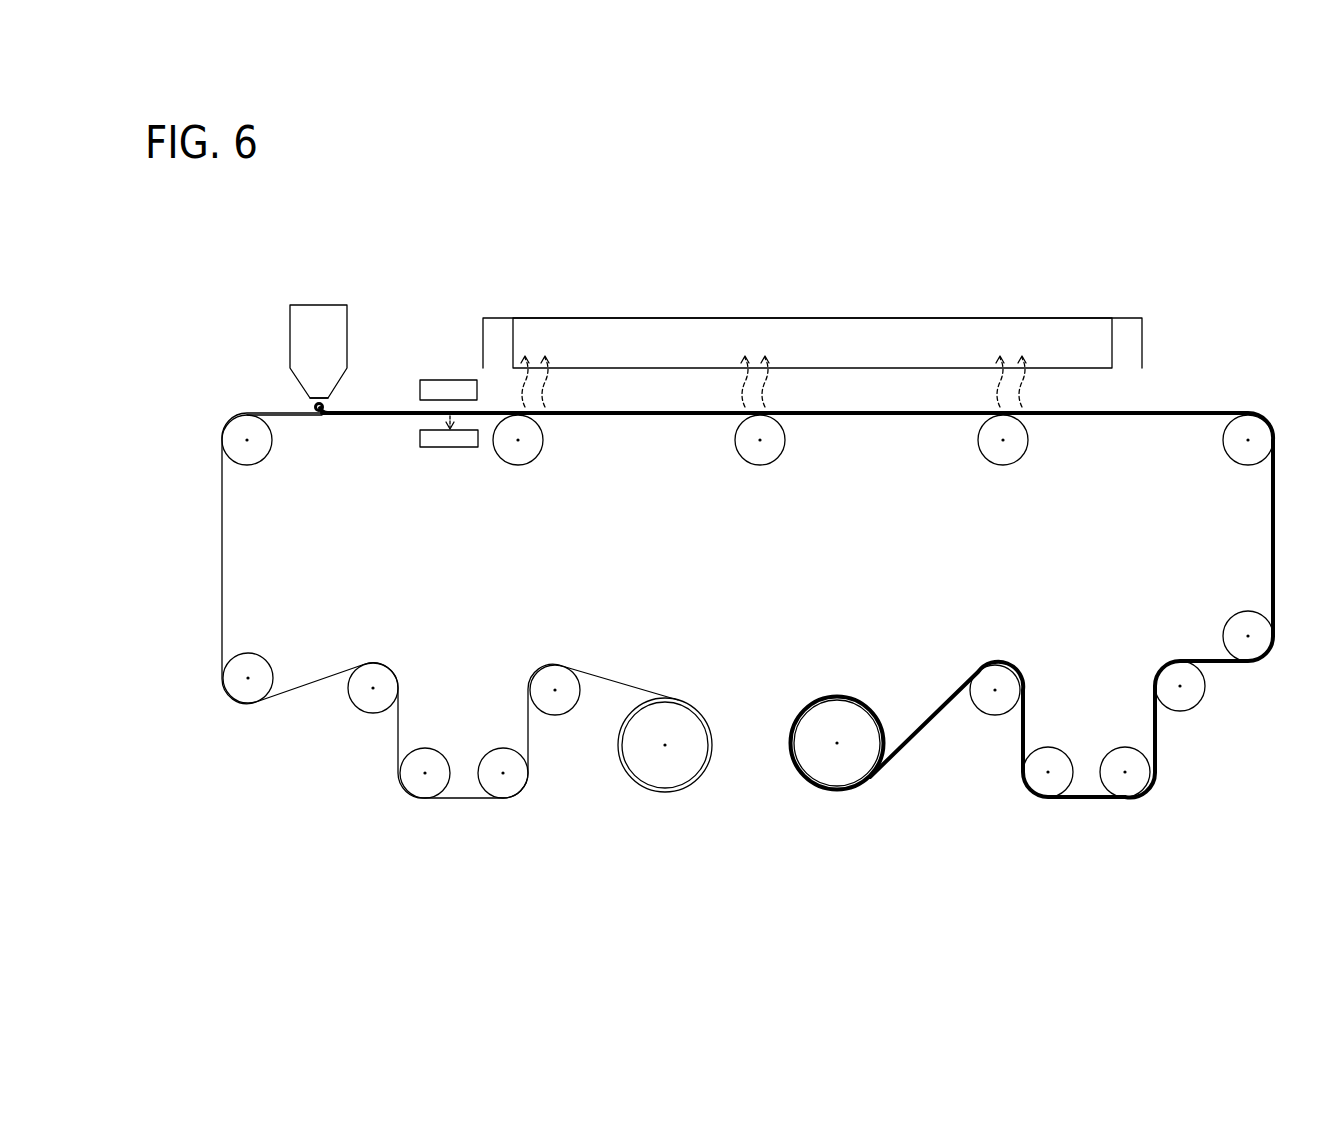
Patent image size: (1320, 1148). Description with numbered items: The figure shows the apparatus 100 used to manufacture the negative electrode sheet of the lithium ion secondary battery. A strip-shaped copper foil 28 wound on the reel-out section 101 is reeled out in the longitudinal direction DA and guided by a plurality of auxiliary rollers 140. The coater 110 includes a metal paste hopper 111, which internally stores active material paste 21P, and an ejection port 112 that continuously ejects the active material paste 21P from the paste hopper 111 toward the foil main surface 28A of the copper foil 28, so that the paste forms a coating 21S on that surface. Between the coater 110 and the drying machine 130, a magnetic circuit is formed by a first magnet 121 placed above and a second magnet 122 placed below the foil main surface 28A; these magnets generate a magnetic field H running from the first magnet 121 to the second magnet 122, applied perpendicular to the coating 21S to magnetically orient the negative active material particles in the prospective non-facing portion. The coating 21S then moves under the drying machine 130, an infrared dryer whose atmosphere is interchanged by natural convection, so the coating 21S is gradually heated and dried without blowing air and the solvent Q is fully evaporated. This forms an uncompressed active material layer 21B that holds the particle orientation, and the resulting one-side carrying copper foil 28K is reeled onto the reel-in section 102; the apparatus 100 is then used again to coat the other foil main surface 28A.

The apparatus 100 is at (1023, 249).
The coater 110 is at (359, 296).
The paste hopper 111 is at (338, 305).
The ejection port 112 is at (345, 398).
The coating 21S is at (390, 410).
The active material paste 21P is at (316, 408).
The foil main surface 28A is at (295, 412).
The magnetic field H is at (410, 410).
The first magnet 121 is at (455, 380).
The second magnet 122 is at (449, 447).
The drying machine 130 is at (968, 318).
The solvent Q is at (773, 365).
The uncompressed active material layer 21B is at (1208, 405).
The auxiliary rollers 140 is at (703, 606).
The longitudinal direction DA is at (205, 535).
The copper foil 28 is at (690, 792).
The reel-out section 101 is at (640, 770).
The reel-in section 102 is at (812, 723).
The one-side carrying copper foil 28K is at (840, 790).